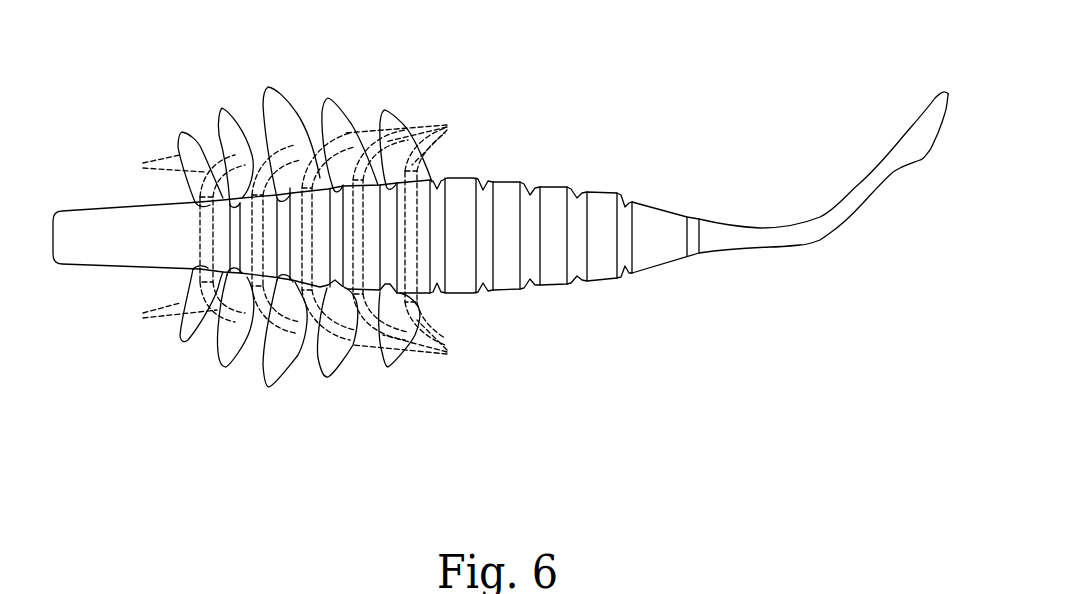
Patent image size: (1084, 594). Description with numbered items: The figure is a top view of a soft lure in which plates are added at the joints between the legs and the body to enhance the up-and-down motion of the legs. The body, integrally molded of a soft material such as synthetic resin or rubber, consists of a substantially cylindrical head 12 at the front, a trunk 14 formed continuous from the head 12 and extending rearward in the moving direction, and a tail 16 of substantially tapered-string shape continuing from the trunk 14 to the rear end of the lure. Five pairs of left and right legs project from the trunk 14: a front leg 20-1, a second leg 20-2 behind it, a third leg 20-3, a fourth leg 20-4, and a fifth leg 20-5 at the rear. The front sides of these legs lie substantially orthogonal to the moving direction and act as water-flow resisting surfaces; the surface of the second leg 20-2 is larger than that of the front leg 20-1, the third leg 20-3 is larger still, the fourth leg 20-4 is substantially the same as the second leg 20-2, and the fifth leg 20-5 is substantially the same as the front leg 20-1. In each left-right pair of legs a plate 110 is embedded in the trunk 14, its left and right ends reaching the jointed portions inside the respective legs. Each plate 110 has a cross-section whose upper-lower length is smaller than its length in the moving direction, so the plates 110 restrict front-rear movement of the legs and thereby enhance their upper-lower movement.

The head 12 is at (80, 223).
The trunk 14 is at (505, 215).
The tail 16 is at (742, 235).
The front leg 20-1 is at (182, 132).
The second leg 20-2 is at (223, 110).
The third leg 20-3 is at (267, 86).
The fourth leg 20-4 is at (327, 97).
The fifth leg 20-5 is at (385, 109).
The plate 110 is at (301, 239).